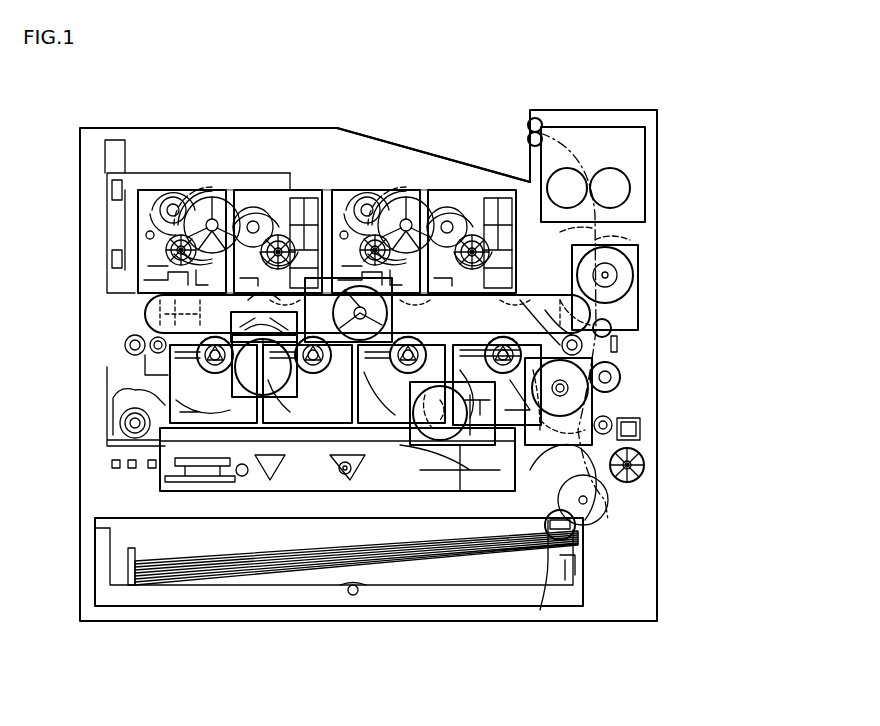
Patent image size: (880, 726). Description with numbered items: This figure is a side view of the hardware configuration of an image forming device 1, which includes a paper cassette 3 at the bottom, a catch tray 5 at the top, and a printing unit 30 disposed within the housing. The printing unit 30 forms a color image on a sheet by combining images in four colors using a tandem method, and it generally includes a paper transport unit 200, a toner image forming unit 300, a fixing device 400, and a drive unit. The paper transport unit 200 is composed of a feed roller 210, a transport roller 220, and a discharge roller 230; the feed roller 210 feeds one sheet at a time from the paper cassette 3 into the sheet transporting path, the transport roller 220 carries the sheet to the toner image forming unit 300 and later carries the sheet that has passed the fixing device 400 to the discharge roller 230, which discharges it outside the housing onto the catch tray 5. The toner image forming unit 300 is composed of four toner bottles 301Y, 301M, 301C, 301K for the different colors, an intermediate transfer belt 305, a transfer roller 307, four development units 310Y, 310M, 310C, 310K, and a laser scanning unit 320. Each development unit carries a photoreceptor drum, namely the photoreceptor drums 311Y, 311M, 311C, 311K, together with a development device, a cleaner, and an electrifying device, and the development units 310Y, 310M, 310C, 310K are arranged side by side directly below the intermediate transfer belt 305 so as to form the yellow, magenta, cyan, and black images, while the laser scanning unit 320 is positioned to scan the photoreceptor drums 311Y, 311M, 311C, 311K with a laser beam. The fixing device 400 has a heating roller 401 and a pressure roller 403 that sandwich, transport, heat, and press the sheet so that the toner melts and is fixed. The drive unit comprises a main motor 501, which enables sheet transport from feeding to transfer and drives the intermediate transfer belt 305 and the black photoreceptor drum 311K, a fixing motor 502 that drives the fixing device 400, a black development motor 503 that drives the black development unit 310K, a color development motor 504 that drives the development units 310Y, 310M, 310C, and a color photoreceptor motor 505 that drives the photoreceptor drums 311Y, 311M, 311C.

The image forming device 1 is at (76, 187).
The paper cassette 3 is at (133, 608).
The catch tray 5 is at (434, 158).
The printing unit 30 is at (88, 499).
The paper transport unit 200 is at (776, 470).
The feed roller 210 is at (575, 516).
The transport roller 220 is at (643, 493).
The discharge roller 230 is at (593, 343).
The toner image forming unit 300 is at (126, 297).
The yellow toner bottle 301Y is at (175, 190).
The magenta toner bottle 301M is at (255, 190).
The cyan toner bottle 301C is at (372, 190).
The black toner bottle 301K is at (472, 190).
The intermediate transfer belt 305 is at (145, 320).
The transfer roller 307 is at (611, 322).
The yellow development unit 310Y is at (168, 366).
The magenta development unit 310M is at (305, 380).
The cyan development unit 310C is at (383, 400).
The black development unit 310K is at (512, 400).
The yellow photoreceptor drum 311Y is at (213, 384).
The magenta photoreceptor drum 311M is at (307, 384).
The cyan photoreceptor drum 311C is at (401, 384).
The black photoreceptor drum 311K is at (485, 365).
The laser scanning unit 320 is at (160, 458).
The fixing device 400 is at (647, 134).
The heating roller 401 is at (578, 165).
The pressure roller 403 is at (633, 193).
The main motor 501 is at (620, 379).
The fixing motor 502 is at (640, 268).
The black development motor 503 is at (452, 440).
The color development motor 504 is at (248, 345).
The color photoreceptor motor 505 is at (340, 280).